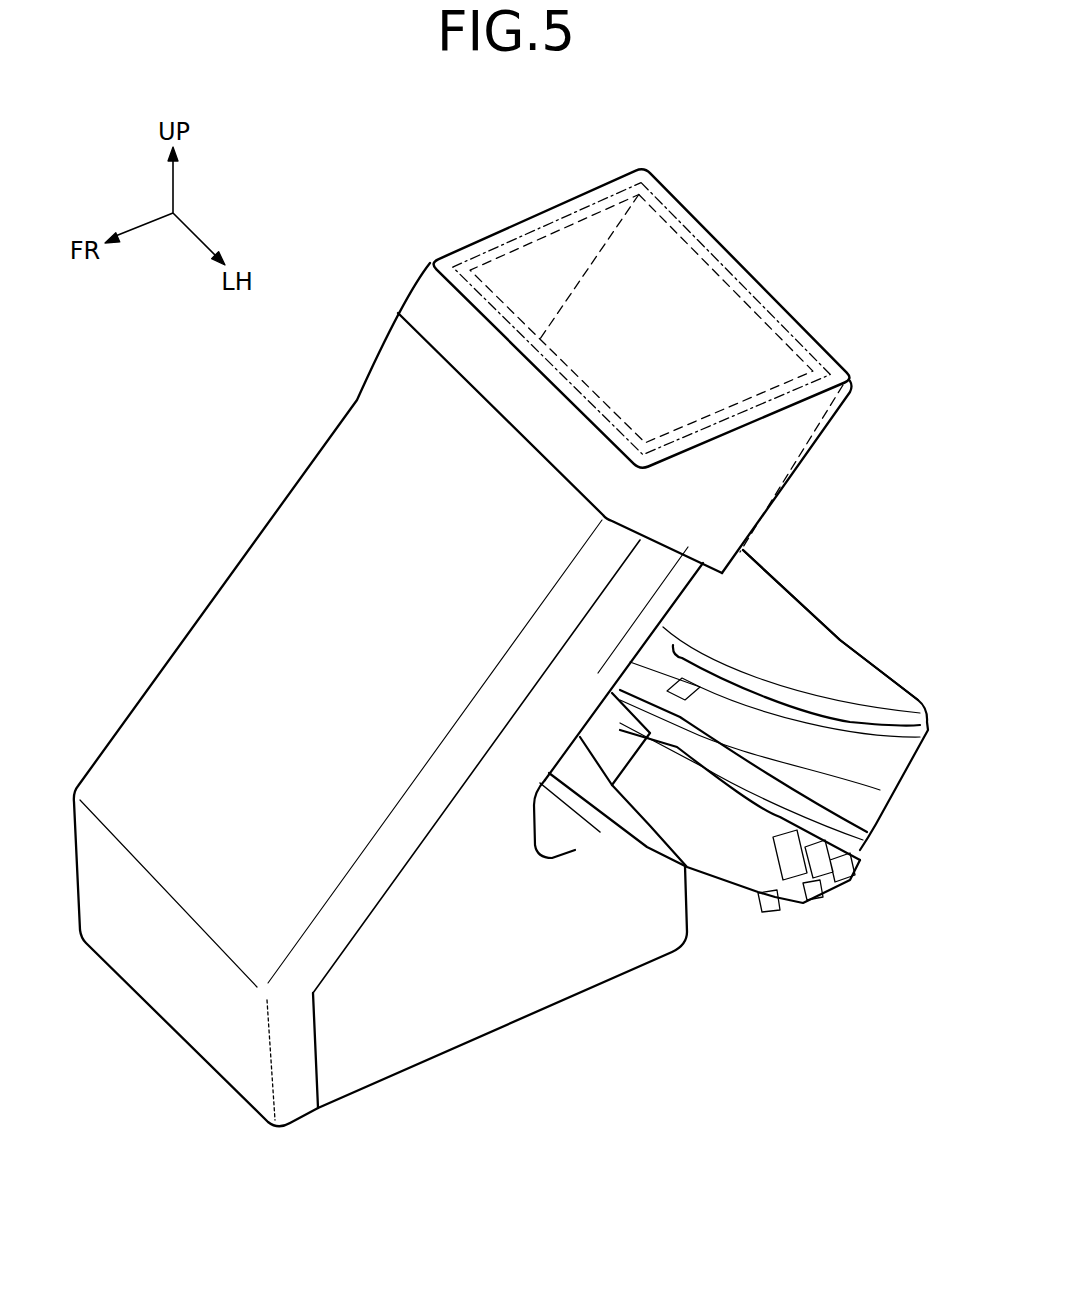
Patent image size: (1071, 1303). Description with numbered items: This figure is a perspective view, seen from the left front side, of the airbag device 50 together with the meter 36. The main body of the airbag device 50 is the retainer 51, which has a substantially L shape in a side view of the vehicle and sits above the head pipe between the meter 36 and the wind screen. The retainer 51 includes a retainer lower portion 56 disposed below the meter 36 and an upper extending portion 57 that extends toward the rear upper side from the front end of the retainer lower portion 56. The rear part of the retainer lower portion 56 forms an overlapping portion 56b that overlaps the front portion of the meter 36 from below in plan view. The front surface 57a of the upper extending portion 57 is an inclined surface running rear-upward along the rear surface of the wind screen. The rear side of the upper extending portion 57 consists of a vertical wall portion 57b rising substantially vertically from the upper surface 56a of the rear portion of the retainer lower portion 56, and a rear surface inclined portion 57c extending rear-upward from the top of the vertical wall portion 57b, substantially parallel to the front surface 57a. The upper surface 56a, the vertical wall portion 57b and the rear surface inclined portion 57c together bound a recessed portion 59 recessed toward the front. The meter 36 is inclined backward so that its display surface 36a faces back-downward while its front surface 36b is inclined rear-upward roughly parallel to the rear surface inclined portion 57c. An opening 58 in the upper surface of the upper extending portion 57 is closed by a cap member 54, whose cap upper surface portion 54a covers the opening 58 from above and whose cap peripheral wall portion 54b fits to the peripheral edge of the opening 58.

The meter 36 is at (890, 678).
The display surface 36a is at (747, 603).
The front surface of the meter 36b is at (613, 737).
The airbag device 50 is at (293, 453).
The retainer 51 is at (188, 603).
The cap member 54 is at (608, 185).
The cap upper surface portion 54a is at (582, 262).
The cap peripheral wall portion 54b is at (450, 327).
The retainer lower portion 56 is at (605, 983).
The upper surface of the rear portion of the retainer lower portion 56a is at (687, 868).
The overlapping portion 56b is at (583, 937).
The upper extending portion 57 is at (290, 602).
The front surface 57a is at (390, 457).
The vertical wall portion 57b is at (570, 812).
The rear surface inclined portion 57c is at (877, 797).
The opening 58 is at (497, 253).
The recessed portion 59 is at (595, 818).